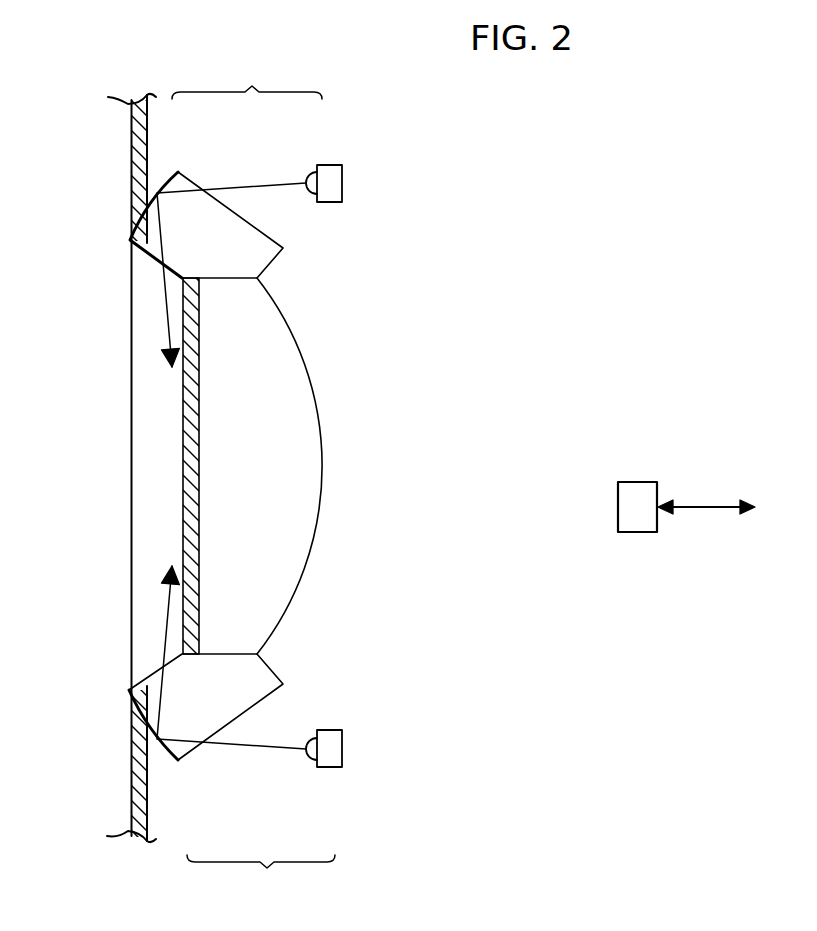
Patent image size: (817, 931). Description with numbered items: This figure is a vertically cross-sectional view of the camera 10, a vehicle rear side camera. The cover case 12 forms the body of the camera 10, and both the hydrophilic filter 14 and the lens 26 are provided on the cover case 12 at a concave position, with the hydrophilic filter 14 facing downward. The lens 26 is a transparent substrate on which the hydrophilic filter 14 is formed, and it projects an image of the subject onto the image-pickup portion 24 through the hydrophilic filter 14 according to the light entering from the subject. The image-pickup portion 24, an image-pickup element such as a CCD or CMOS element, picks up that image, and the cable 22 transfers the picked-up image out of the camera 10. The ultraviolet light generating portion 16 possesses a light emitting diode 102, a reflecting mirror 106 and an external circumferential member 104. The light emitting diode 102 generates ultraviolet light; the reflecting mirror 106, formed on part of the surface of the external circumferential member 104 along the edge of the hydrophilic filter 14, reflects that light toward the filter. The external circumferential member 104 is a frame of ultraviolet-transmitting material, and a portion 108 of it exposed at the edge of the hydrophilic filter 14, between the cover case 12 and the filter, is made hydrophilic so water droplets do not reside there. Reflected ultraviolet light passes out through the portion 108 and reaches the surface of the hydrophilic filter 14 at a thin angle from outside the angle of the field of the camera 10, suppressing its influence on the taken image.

The camera 10 is at (787, 189).
The cover case 12 is at (131, 152).
The hydrophilic filter 14 is at (200, 479).
The ultraviolet light generating portion 16 is at (90, 552).
The cable 22 is at (722, 507).
The image-pickup portion 24 is at (643, 488).
The lens 26 is at (298, 477).
The light emitting diode 102 is at (334, 166).
The external circumferential member 104 is at (192, 183).
The reflecting mirror 106 is at (160, 183).
The portion of the external circumferential member 108 is at (130, 267).